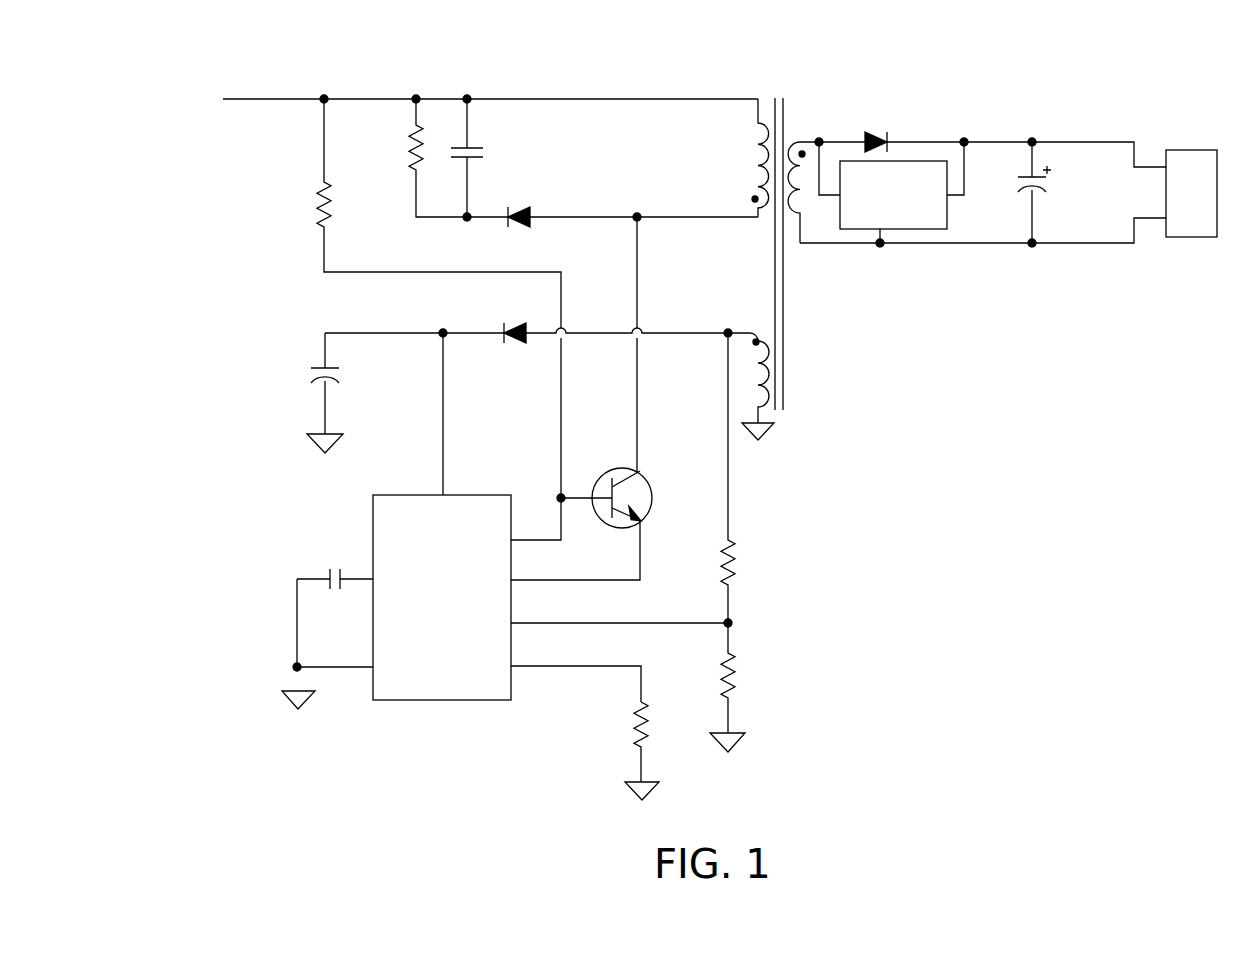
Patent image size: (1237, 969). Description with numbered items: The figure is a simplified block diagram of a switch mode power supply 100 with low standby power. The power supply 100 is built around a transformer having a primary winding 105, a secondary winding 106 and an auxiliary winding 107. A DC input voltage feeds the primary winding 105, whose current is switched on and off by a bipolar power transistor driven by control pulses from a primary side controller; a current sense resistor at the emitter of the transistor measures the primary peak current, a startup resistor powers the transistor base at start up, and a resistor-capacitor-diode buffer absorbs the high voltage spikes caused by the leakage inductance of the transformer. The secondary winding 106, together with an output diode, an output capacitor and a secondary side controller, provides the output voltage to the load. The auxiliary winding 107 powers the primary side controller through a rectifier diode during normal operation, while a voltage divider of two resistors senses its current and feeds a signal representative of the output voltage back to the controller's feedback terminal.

The switch mode power supply 100 is at (1143, 90).
The primary winding 105 is at (757, 91).
The secondary winding 106 is at (797, 134).
The auxiliary winding 107 is at (762, 326).